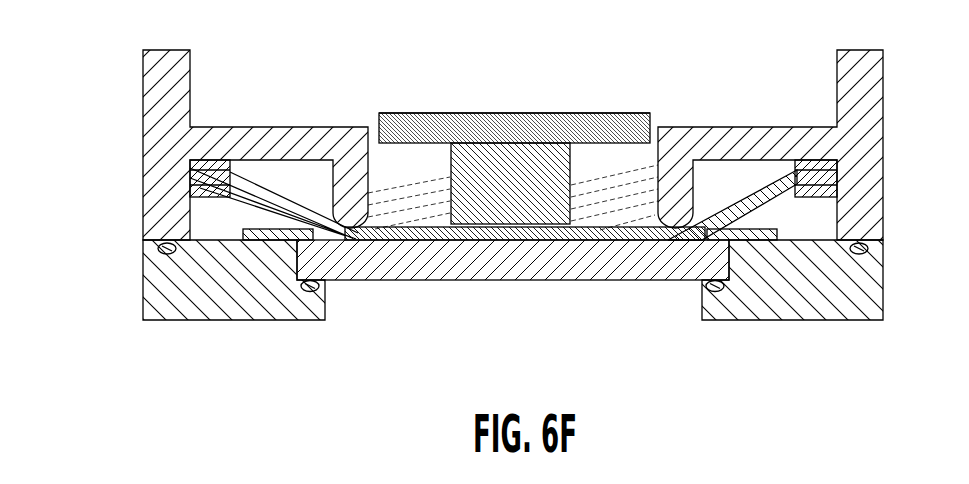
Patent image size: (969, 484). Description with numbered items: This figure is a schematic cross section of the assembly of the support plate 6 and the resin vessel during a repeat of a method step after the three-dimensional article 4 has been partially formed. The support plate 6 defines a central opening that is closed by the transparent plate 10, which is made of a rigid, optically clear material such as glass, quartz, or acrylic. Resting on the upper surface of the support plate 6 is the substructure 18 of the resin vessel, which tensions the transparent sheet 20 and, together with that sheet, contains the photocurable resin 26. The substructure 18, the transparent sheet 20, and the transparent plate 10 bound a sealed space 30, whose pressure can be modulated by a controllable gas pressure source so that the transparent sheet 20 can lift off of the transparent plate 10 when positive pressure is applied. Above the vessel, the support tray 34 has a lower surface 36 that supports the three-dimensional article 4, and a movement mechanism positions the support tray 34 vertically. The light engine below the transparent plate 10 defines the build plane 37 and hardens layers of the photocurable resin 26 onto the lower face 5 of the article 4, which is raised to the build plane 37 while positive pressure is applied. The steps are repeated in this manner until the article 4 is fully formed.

The substructure 18 is at (168, 143).
The support plate 6 is at (203, 296).
The transparent plate 10 is at (480, 265).
The build plane 37 is at (523, 228).
The sealed space 30 is at (232, 218).
The photocurable resin 26 is at (365, 215).
The transparent sheet 20 is at (610, 238).
The lower face 5 is at (518, 226).
The lower surface 36 is at (592, 115).
The support tray 34 is at (437, 118).
The three-dimensional article 4 is at (557, 197).